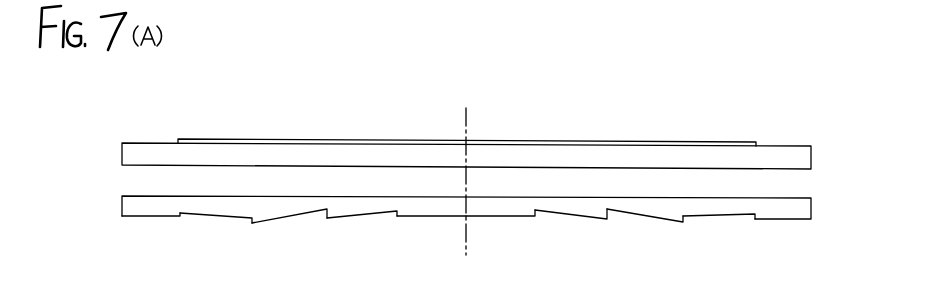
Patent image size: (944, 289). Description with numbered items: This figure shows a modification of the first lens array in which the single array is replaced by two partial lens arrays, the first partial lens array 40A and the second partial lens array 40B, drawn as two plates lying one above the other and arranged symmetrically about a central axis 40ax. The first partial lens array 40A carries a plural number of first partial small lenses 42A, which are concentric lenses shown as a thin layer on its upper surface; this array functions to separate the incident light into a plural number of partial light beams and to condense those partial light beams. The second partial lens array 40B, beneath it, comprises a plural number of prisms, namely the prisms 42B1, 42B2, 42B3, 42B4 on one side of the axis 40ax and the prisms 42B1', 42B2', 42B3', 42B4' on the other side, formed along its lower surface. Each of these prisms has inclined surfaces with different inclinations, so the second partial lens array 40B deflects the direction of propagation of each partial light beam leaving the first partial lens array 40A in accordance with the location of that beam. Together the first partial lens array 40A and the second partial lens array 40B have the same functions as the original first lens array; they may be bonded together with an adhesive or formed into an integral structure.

The first partial lens array 40A is at (792, 114).
The second partial lens array 40B is at (833, 201).
The central axis 40ax is at (466, 108).
The first partial small lenses 42A is at (640, 137).
The prism 42B1 is at (504, 245).
The prism 42B2 is at (577, 244).
The prism 42B3 is at (652, 244).
The prism 42B4 is at (730, 247).
The prism 42B1' is at (427, 248).
The prism 42B2' is at (353, 245).
The prism 42B3' is at (280, 244).
The prism 42B4' is at (203, 246).